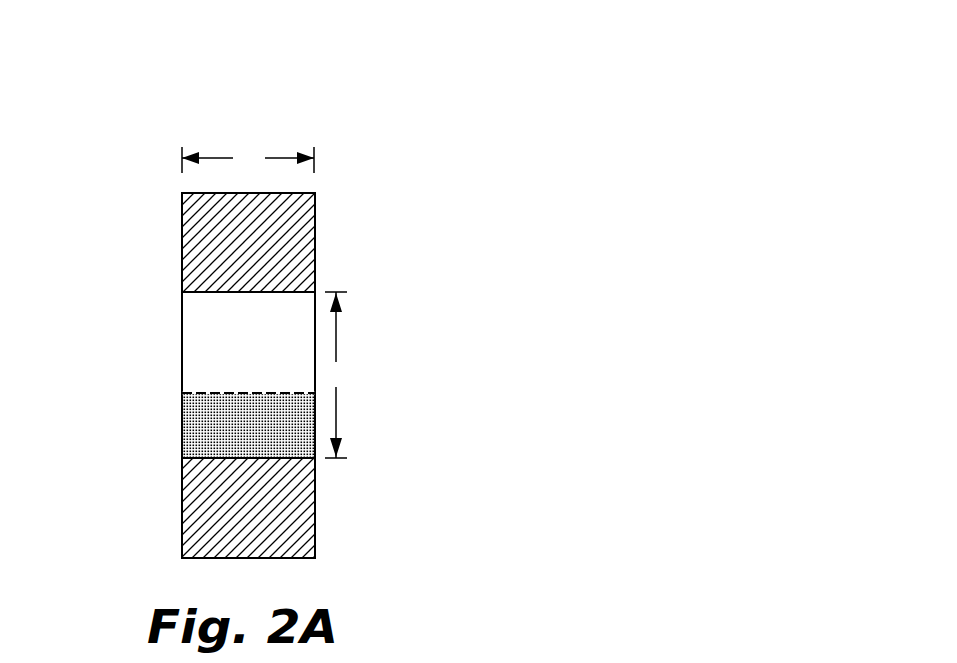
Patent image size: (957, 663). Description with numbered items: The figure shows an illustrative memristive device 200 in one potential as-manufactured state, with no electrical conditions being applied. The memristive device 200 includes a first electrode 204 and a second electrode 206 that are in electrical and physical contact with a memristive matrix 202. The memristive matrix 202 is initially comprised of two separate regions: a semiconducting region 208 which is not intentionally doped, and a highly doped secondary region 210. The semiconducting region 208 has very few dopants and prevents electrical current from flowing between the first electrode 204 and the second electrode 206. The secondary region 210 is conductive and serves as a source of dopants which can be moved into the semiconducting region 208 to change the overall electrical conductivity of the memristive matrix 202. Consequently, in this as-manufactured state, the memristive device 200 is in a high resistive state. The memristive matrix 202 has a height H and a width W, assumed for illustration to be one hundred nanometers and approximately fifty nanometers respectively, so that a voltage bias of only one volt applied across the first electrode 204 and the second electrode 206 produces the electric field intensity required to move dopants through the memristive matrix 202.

The memristive device 200 is at (324, 282).
The memristive matrix 202 is at (331, 376).
The first electrode 204 is at (167, 291).
The second electrode 206 is at (184, 508).
The semiconducting region 208 is at (297, 320).
The secondary region 210 is at (303, 412).